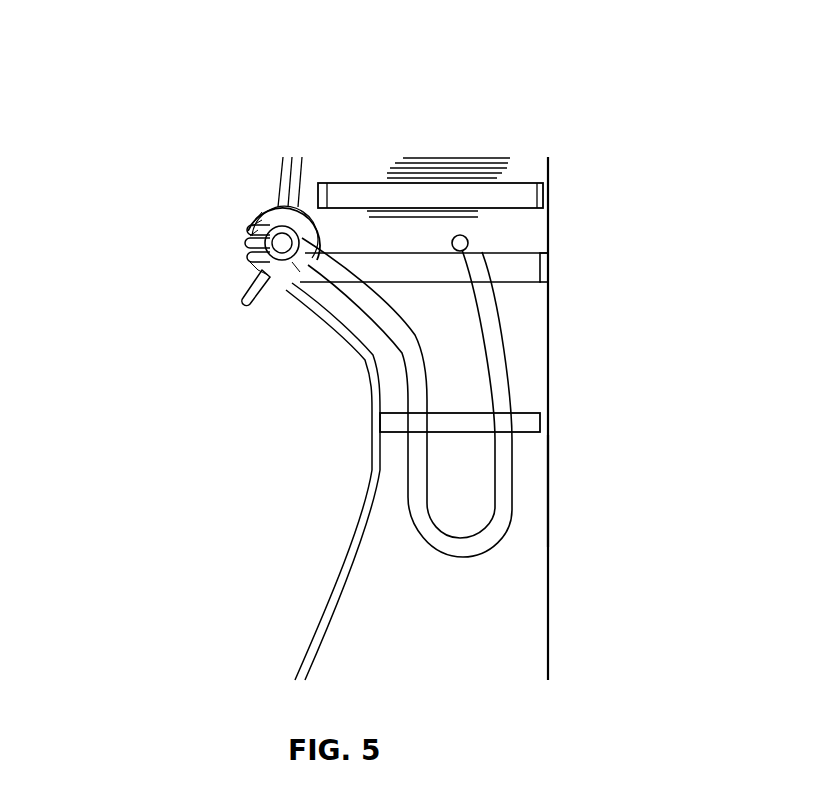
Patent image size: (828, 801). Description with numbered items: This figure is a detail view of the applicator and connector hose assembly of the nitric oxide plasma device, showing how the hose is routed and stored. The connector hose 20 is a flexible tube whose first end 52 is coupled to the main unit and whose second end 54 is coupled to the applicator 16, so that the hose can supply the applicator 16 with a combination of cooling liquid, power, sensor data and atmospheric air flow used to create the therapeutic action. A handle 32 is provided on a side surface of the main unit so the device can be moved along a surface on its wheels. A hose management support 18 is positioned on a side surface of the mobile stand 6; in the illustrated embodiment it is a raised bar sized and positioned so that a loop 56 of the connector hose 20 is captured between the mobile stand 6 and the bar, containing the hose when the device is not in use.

The mobile stand 6 is at (285, 583).
The applicator 16 is at (243, 278).
The hose management support 18 is at (533, 412).
The connector hose 20 is at (400, 442).
The handle 32 is at (510, 193).
The first end 52 is at (476, 237).
The second end 54 is at (270, 222).
The loop 56 is at (557, 435).